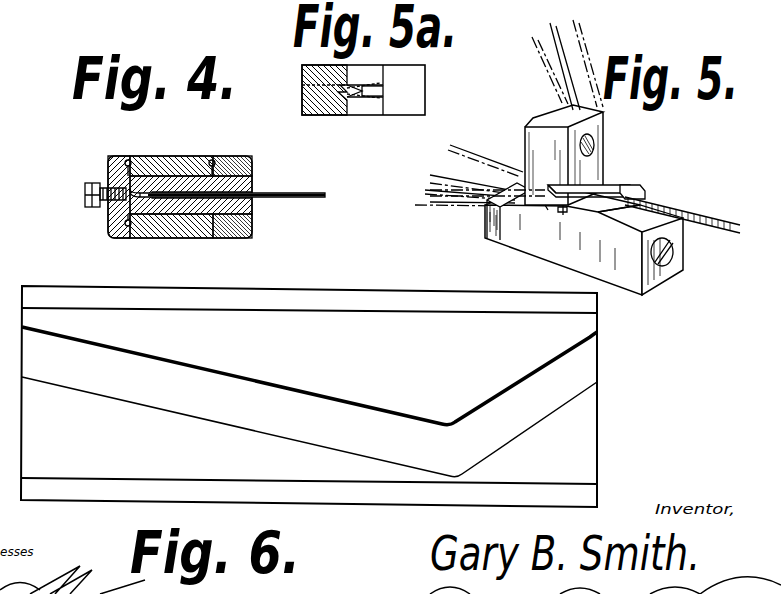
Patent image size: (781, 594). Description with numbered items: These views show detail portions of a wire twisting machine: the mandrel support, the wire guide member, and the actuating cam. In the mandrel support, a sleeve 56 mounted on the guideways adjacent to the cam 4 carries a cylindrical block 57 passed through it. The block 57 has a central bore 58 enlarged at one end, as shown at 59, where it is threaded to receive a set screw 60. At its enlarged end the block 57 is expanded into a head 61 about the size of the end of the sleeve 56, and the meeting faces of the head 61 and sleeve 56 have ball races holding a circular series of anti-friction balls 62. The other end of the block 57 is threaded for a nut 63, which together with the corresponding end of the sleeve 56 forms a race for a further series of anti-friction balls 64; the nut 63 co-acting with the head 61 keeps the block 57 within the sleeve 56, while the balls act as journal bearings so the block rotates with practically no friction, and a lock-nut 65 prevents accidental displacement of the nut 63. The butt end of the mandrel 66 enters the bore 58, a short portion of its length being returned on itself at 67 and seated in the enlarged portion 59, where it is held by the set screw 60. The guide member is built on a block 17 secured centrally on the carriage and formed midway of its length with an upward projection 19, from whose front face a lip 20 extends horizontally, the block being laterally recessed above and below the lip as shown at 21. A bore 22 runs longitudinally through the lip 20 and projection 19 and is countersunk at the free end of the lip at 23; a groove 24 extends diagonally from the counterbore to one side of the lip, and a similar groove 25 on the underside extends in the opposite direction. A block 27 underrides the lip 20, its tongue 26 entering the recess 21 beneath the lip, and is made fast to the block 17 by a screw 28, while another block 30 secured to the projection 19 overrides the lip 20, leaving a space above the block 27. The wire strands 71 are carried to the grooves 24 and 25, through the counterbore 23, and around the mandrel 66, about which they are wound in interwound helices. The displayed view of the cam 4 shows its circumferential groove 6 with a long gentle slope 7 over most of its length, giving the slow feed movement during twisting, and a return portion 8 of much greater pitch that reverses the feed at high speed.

In FIG. 6, the cam 4 is at (309, 396).
In FIG. 6, the circumferential groove 6 is at (229, 386).
In FIG. 6, the long gentle slope 7 is at (175, 408).
In FIG. 6, the return portion 8 is at (545, 408).
In FIG. 5, the block 17 is at (487, 222).
In FIG. 5A, the upward projection 19 is at (302, 79).
In FIG. 5, the upward projection 19 is at (533, 128).
In FIG. 5, the lip 20 is at (620, 184).
In FIG. 5, the recess 21 is at (598, 170).
In FIG. 5A, the bore 22 is at (385, 98).
In FIG. 5, the bore 22 is at (660, 196).
In FIG. 5, the counterbore 23 is at (642, 187).
In FIG. 5, the groove 24 is at (503, 212).
In FIG. 5A, the groove 25 is at (350, 98).
In FIG. 5, the tongue 26 is at (564, 214).
In FIG. 5, the block 27 is at (625, 282).
In FIG. 5, the screw 28 is at (668, 262).
In FIG. 5A, the block 30 is at (427, 90).
In FIG. 4, the sleeve 56 is at (149, 157).
In FIG. 4, the cylindrical block 57 is at (190, 178).
In FIG. 4, the central bore 58 is at (253, 170).
In FIG. 4, the enlarged portion 59 is at (127, 160).
In FIG. 4, the set screw 60 is at (90, 206).
In FIG. 4, the head 61 is at (112, 236).
In FIG. 4, the anti-friction balls 62 is at (118, 162).
In FIG. 4, the nut 63 is at (232, 157).
In FIG. 4, the anti-friction balls 64 is at (213, 232).
In FIG. 4, the lock-nut 65 is at (249, 162).
In FIG. 4, the mandrel 66 is at (294, 205).
In FIG. 4, the returned end 67 is at (148, 239).
In FIG. 5, the wire strands 71 is at (580, 33).